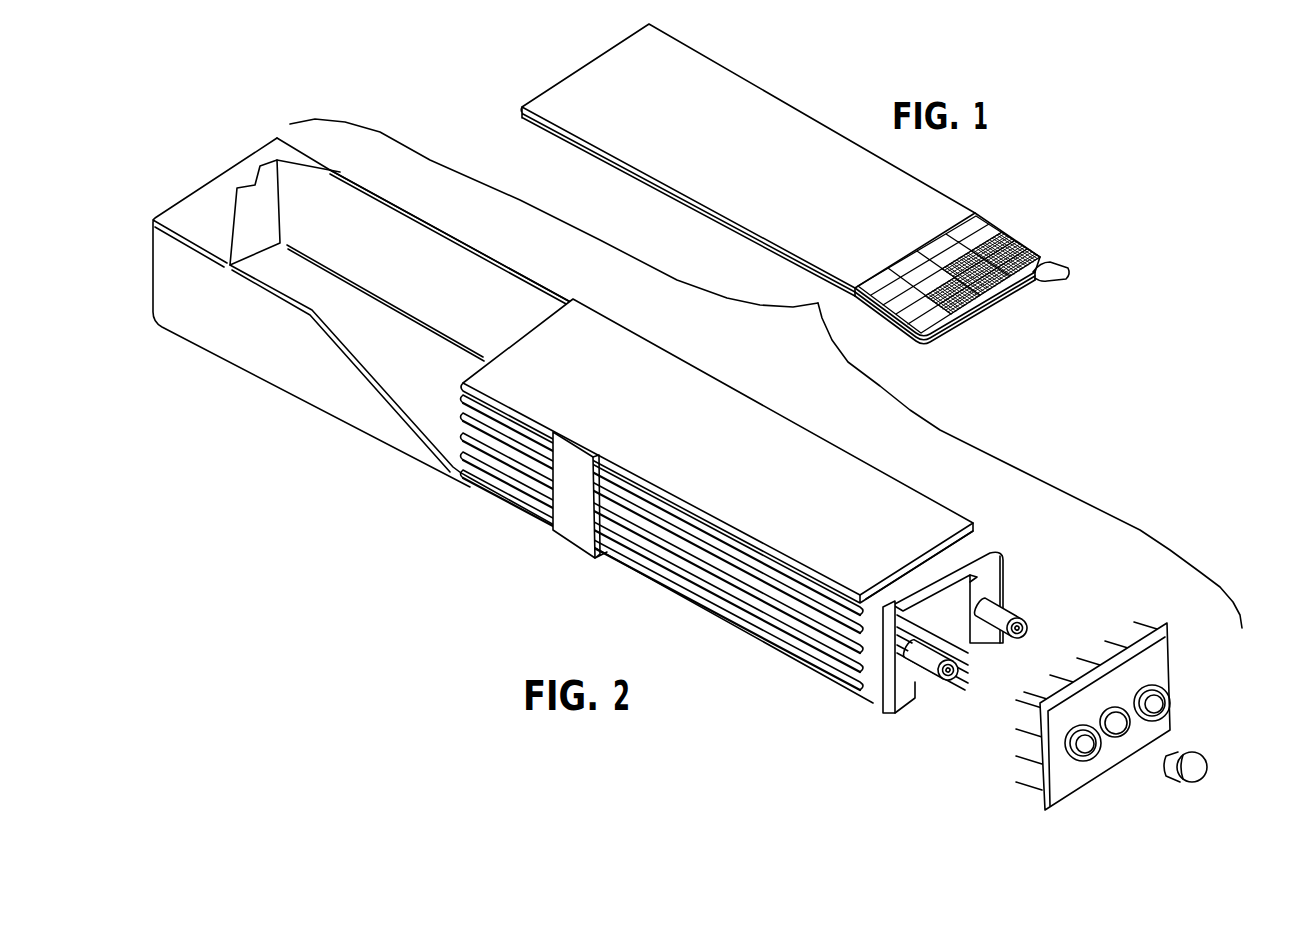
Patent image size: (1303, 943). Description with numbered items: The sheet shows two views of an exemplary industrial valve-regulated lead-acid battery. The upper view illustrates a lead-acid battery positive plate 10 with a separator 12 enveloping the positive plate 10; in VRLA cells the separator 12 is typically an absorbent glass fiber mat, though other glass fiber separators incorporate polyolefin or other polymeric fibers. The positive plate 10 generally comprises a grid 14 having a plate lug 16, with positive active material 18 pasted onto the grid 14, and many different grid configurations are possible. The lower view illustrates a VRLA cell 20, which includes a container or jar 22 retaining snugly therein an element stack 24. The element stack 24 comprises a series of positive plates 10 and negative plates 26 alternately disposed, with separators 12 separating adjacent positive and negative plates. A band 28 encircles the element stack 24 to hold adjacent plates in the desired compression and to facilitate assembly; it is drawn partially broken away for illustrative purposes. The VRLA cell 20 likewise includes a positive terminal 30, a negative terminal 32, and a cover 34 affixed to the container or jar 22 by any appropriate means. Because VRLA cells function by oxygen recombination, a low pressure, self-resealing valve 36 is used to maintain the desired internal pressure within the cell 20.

In FIG. 1, the positive plate 10 is at (1007, 223).
In FIG. 2, the positive plate 10 is at (972, 540).
In FIG. 1, the separator 12 is at (869, 205).
In FIG. 1, the grid 14 is at (934, 325).
In FIG. 1, the plate lug 16 is at (1058, 274).
In FIG. 1, the positive active material 18 is at (998, 276).
In FIG. 2, the VRLA cell 20 is at (470, 234).
In FIG. 2, the container or jar 22 is at (264, 360).
In FIG. 2, the element stack 24 is at (713, 402).
In FIG. 2, the negative plate 26 is at (889, 677).
In FIG. 2, the band 28 is at (556, 509).
In FIG. 2, the positive terminal 30 is at (1007, 603).
In FIG. 2, the negative terminal 32 is at (935, 680).
In FIG. 2, the cover 34 is at (1163, 660).
In FIG. 2, the self-resealing valve 36 is at (1204, 768).